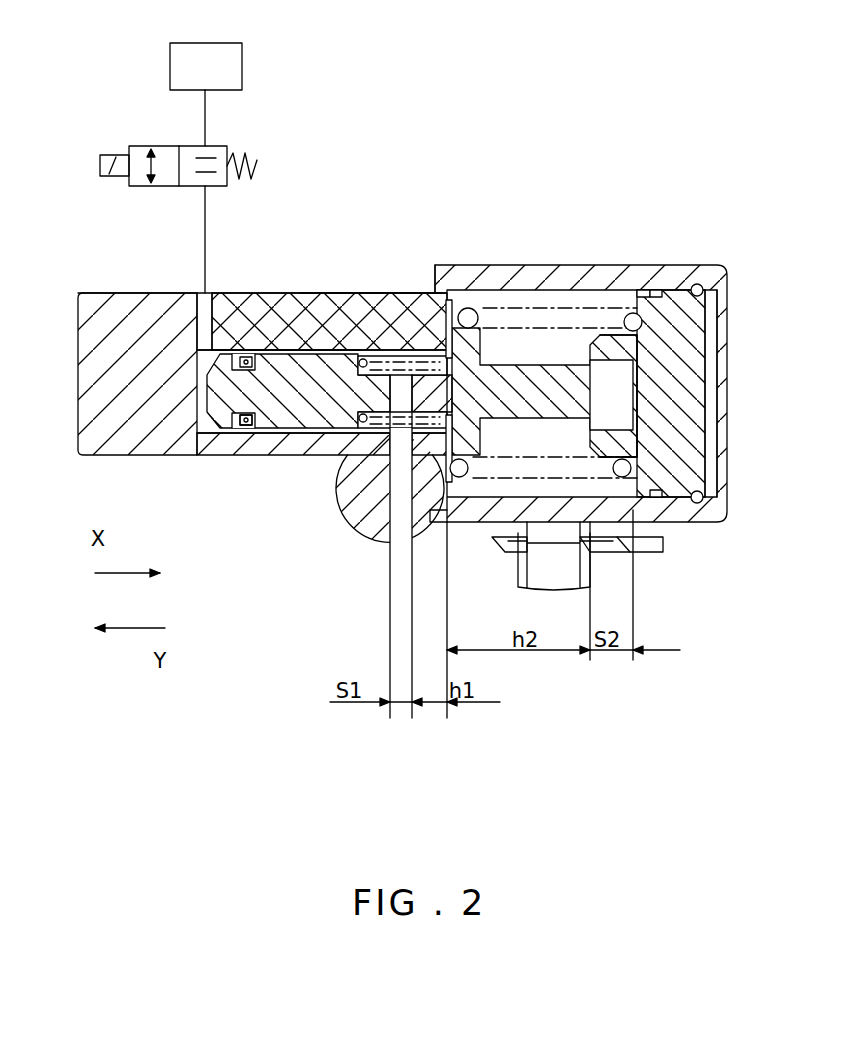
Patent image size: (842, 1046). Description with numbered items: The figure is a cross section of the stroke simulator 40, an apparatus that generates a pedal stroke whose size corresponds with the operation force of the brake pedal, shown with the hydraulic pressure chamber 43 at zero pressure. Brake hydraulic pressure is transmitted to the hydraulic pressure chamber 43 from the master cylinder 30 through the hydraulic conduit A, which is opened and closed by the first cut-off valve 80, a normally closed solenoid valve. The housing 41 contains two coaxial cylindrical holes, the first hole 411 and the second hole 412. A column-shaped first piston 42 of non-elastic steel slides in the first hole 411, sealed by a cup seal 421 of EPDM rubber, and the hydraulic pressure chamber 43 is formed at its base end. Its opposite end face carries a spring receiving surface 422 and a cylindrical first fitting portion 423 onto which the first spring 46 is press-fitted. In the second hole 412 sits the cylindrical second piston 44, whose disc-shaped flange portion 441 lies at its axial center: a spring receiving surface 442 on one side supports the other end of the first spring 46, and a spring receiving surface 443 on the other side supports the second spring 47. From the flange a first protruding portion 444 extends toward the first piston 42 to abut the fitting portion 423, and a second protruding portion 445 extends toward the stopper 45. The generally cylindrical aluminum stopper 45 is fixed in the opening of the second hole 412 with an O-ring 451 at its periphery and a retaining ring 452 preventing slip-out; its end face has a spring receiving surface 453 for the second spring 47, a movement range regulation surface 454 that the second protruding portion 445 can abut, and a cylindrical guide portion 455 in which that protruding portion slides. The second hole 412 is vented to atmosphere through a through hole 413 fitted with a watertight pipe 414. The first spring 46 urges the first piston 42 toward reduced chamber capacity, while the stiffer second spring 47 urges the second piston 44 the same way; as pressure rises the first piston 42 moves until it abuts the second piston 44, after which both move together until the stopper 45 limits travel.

The master cylinder 30 is at (243, 50).
The hydraulic conduit A is at (205, 115).
The first cut-off valve 80 is at (215, 146).
The stroke simulator 40 is at (95, 285).
The housing 41 is at (93, 357).
The first hole 411 is at (193, 427).
The first piston 42 is at (258, 328).
The cup seal 421 is at (250, 423).
The spring receiving surface 422 is at (287, 375).
The first fitting portion 423 is at (350, 347).
The hydraulic pressure chamber 43 is at (203, 393).
The second piston 44 is at (420, 376).
The flange portion 441 is at (449, 300).
The spring receiving surface 442 is at (427, 390).
The spring receiving surface 443 is at (468, 308).
The first protruding portion 444 is at (364, 356).
The second protruding portion 445 is at (522, 380).
The second hole 412 is at (580, 296).
The through hole 413 is at (527, 520).
The watertight pipe 414 is at (513, 553).
The stopper 45 is at (690, 330).
The O-ring 451 is at (700, 290).
The retaining ring 452 is at (720, 292).
The spring receiving surface 453 is at (657, 290).
The movement range regulation surface 454 is at (637, 407).
The guide portion 455 is at (620, 340).
The first spring 46 is at (352, 512).
The second spring 47 is at (622, 470).